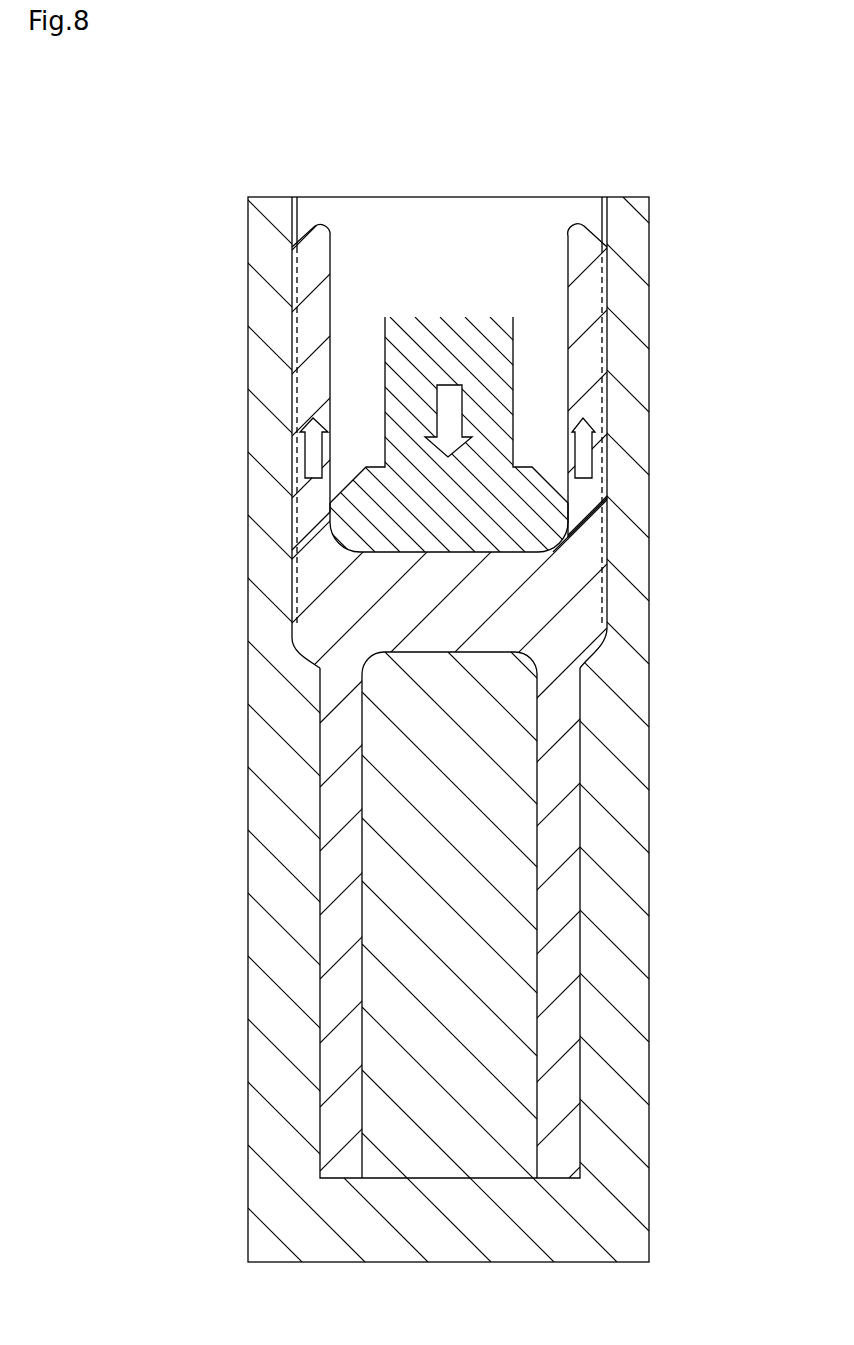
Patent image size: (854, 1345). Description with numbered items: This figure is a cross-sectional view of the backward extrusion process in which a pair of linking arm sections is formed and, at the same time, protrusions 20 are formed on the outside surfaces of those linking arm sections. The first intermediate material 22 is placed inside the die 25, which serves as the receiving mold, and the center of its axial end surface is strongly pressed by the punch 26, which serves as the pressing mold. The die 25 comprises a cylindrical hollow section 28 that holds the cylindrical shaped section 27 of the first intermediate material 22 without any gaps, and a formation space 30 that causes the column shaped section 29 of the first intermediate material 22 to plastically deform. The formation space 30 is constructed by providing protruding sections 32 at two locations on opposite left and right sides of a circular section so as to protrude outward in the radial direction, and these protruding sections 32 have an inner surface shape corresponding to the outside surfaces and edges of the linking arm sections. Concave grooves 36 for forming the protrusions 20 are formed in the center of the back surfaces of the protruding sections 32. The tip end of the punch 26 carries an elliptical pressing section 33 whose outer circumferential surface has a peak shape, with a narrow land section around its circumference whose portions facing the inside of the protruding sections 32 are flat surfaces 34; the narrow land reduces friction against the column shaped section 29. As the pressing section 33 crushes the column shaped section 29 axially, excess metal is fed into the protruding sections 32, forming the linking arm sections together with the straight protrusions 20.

The protrusions 20 is at (293, 463).
The first intermediate material 22 is at (525, 596).
The die 25 is at (622, 865).
The punch 26 is at (470, 389).
The cylindrical shaped section 27 is at (555, 783).
The cylindrical hollow section 28 is at (558, 1003).
The column shaped section 29 is at (400, 633).
The formation space 30 is at (303, 583).
The protruding sections 32 is at (299, 412).
The pressing section 33 is at (522, 535).
The flat surfaces 34 is at (330, 509).
The concave grooves 36 is at (283, 358).